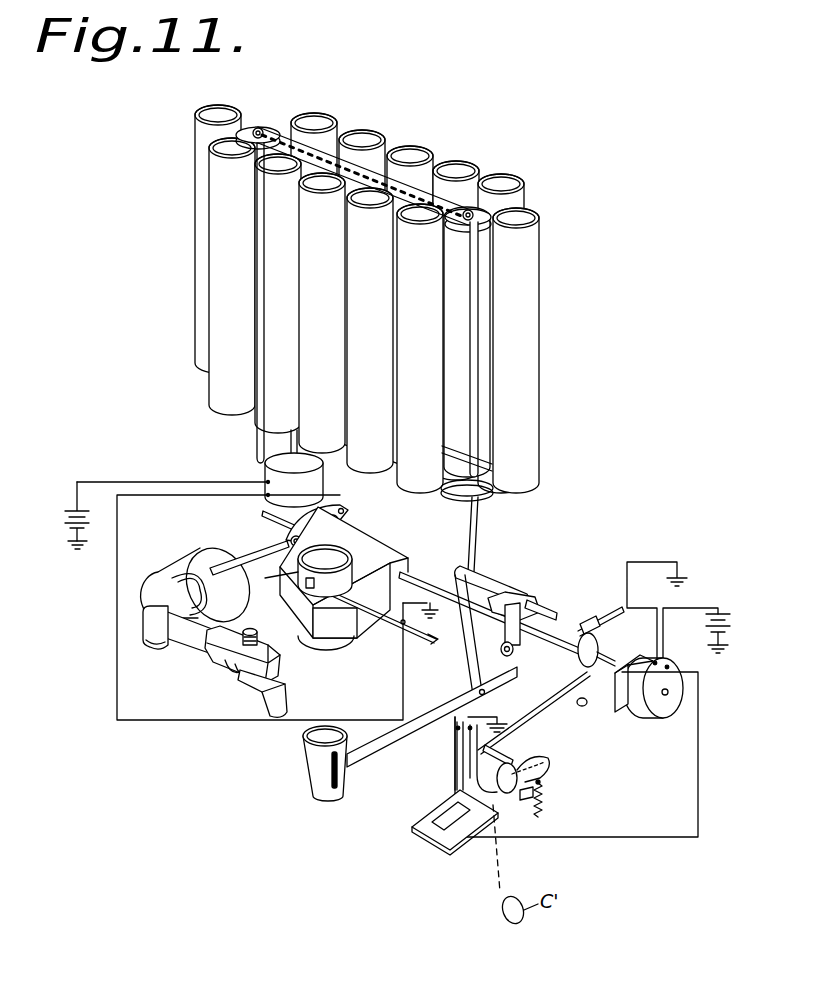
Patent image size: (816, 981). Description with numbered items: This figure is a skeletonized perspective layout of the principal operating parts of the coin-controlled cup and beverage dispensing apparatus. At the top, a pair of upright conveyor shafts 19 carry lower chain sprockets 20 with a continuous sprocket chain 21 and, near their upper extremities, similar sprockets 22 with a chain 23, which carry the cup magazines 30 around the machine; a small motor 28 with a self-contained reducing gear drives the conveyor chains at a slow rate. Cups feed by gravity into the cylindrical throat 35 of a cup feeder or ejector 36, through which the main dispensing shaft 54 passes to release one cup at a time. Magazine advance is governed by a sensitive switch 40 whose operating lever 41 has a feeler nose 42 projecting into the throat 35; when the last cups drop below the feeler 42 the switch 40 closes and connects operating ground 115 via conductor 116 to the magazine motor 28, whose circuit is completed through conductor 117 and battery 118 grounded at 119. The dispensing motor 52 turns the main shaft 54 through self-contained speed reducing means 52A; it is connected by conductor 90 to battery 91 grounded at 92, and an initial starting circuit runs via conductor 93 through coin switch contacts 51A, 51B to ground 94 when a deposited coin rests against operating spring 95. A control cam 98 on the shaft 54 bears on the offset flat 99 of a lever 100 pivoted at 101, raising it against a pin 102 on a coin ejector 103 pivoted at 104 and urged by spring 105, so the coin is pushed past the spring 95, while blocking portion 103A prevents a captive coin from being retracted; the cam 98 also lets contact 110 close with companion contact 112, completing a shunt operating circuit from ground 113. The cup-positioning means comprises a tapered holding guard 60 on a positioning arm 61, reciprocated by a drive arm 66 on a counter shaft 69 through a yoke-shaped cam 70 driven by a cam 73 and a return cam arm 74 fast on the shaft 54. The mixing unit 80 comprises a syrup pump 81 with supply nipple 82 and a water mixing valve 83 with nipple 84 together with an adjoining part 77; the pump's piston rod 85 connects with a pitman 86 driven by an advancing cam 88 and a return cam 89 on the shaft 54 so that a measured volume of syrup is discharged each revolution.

The upright conveyor shafts 19 is at (257, 445).
The chain sprocket 20 is at (487, 478).
The sprocket chain 21 is at (462, 494).
The sprockets 22 is at (262, 128).
The chain 23 is at (418, 178).
The motor 28 is at (323, 486).
The cylinder 30 is at (215, 230).
The cylindrical throat 35 is at (269, 583).
The cup feeder or ejector 36 is at (344, 572).
The sensitive switch 40 is at (403, 633).
The operating lever 41 is at (353, 602).
The feeler nose 42 is at (300, 592).
The coin switch contact 51A is at (458, 762).
The coin switch contact 51B is at (453, 780).
The dispensing motor 52 is at (661, 705).
The speed reducing means 52A is at (622, 713).
The main dispensing shaft 54 is at (266, 514).
The cup holding guard 60 is at (342, 778).
The positioning arm 61 is at (435, 712).
The drive arm 66 is at (472, 665).
The counter shaft 69 is at (495, 585).
The yoke-shaped cam 70 is at (525, 593).
The cam 73 is at (507, 655).
The return cam arm 74 is at (517, 628).
The lever 77 is at (284, 700).
The mixing unit 80 is at (178, 651).
The syrup pump 81 is at (190, 562).
The nipple 82 is at (145, 622).
The water mixing valve 83 is at (274, 660).
The nipple 84 is at (258, 618).
The piston rod 85 is at (258, 565).
The pitman 86 is at (350, 510).
The advancing cam 88 is at (343, 528).
The return cam 89 is at (285, 494).
The conductor 90 is at (665, 636).
The battery 91 is at (730, 615).
The ground 92 is at (740, 643).
The conductor 93 is at (640, 837).
The ground 94 is at (500, 720).
The operating spring 95 is at (450, 788).
The control cam 98 is at (583, 670).
The offset flat 99 is at (586, 704).
The lever 100 is at (562, 713).
The pivot 101 is at (580, 705).
The pin 102 is at (520, 748).
The coin ejector 103 is at (550, 762).
The blocking portion 103A is at (542, 781).
The pivot 104 is at (528, 798).
The spring 105 is at (541, 805).
The contact 110 is at (583, 628).
The companion contact 112 is at (618, 617).
The ground 113 is at (679, 577).
The operating ground 115 is at (433, 640).
The conductor 116 is at (182, 722).
The conductor 117 is at (178, 482).
The battery 118 is at (66, 514).
The ground 119 is at (70, 545).